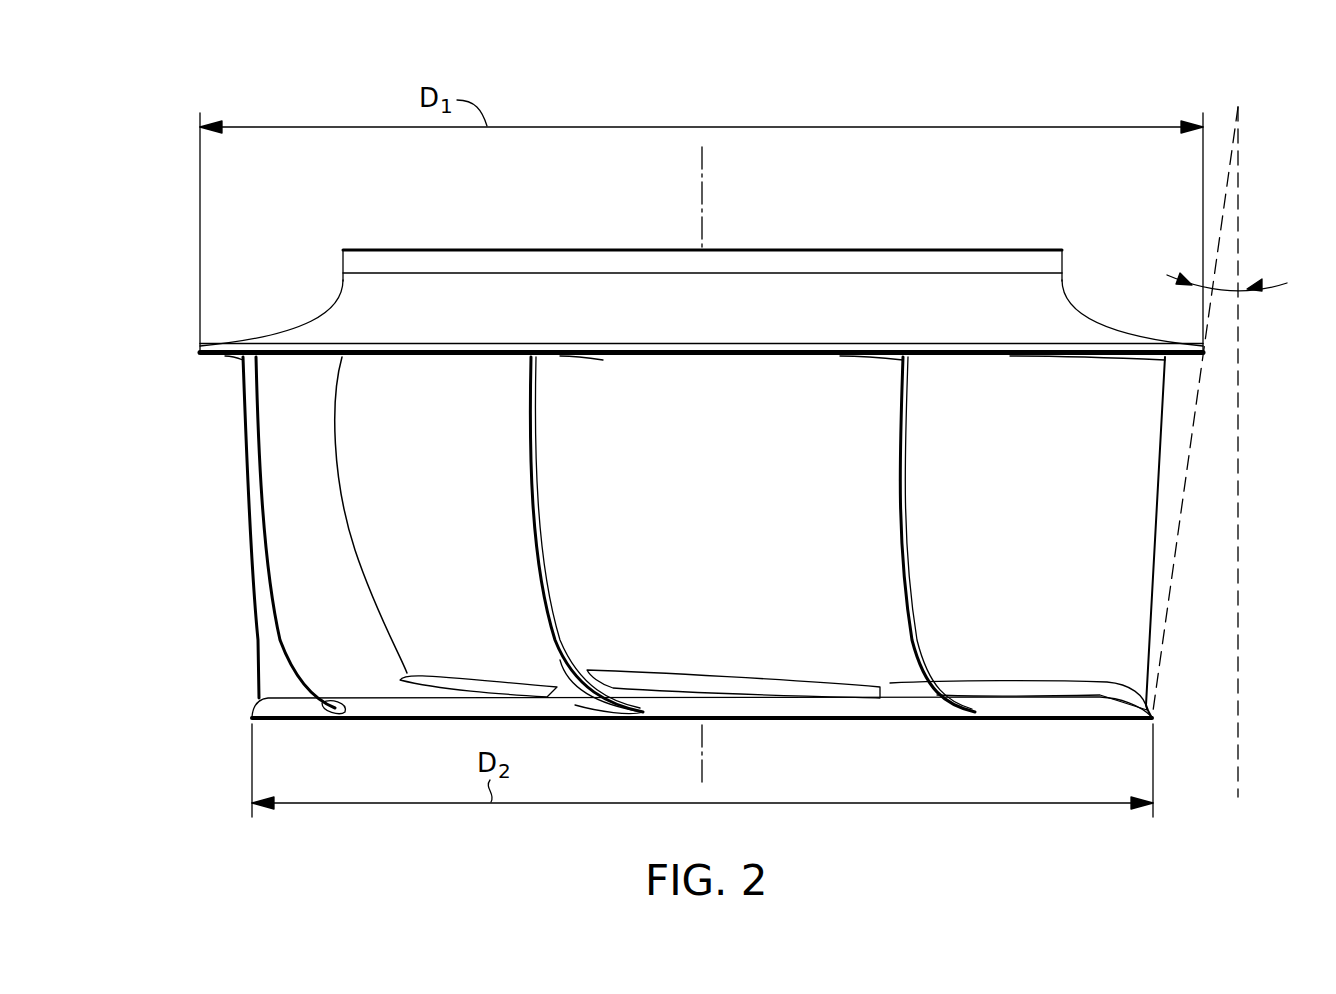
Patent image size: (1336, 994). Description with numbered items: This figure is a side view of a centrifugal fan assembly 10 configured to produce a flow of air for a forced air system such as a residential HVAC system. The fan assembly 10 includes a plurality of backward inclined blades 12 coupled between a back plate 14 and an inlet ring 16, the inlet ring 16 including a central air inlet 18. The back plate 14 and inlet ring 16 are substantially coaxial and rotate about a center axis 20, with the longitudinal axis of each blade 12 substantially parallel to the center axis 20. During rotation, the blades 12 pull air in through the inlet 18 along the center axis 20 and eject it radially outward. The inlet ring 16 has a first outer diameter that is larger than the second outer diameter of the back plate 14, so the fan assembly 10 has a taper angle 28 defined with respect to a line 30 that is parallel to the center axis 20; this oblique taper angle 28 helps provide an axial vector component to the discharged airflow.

The centrifugal fan assembly 10 is at (143, 163).
The blade 12 is at (287, 493).
The back plate 14 is at (1017, 708).
The inlet ring 16 is at (1048, 287).
The central air inlet 18 is at (917, 247).
The center axis 20 is at (703, 173).
The taper angle 28 is at (1225, 293).
The line 30 is at (1240, 208).